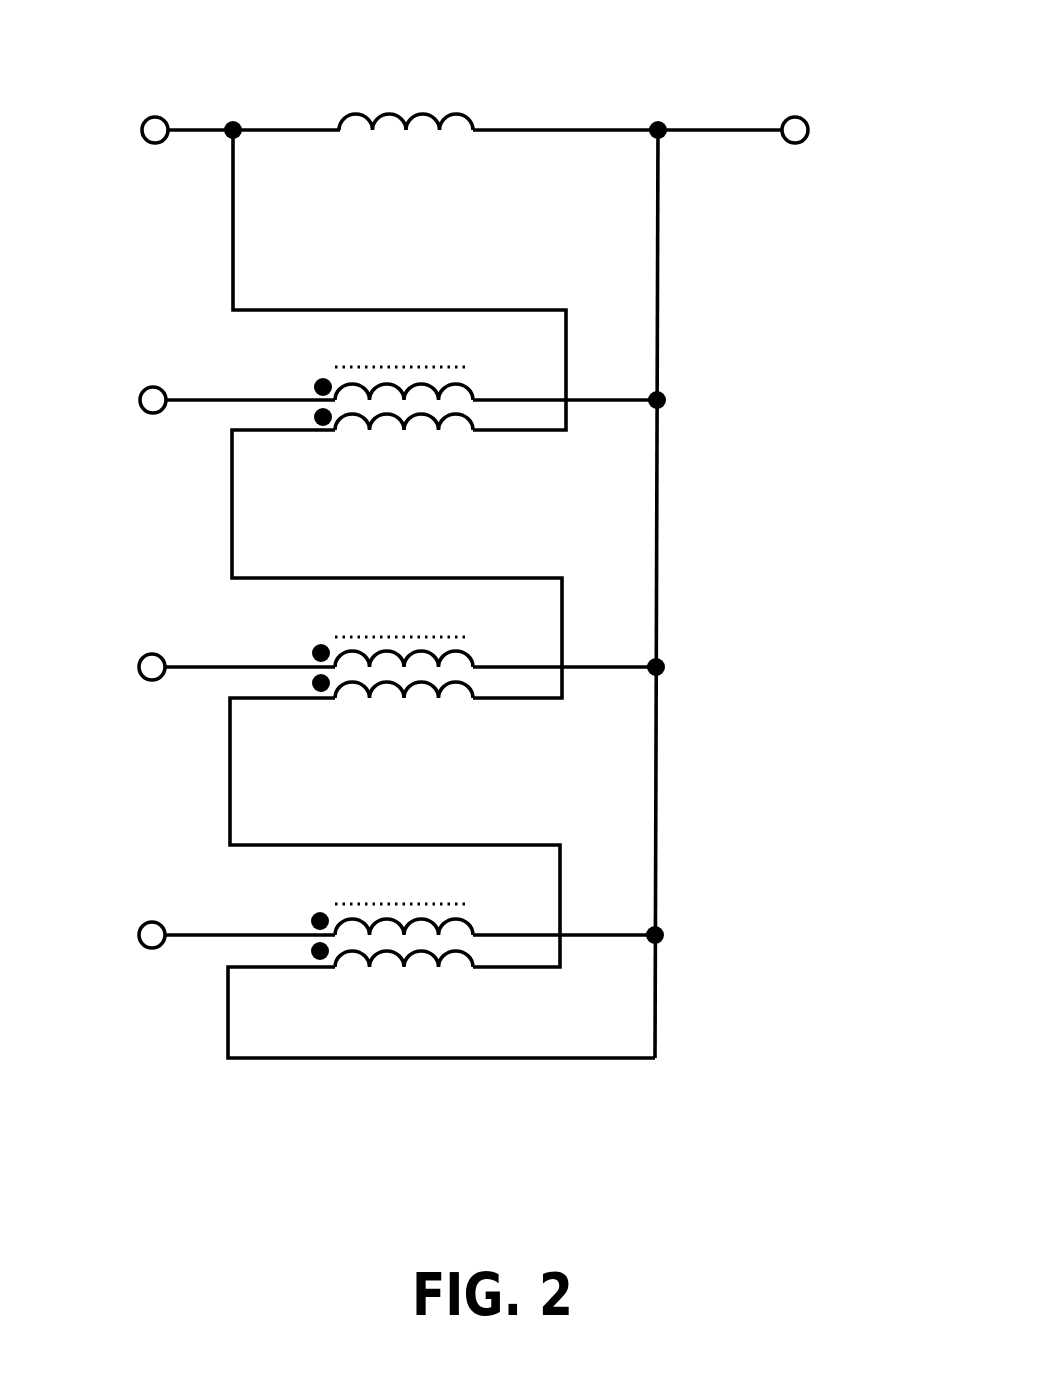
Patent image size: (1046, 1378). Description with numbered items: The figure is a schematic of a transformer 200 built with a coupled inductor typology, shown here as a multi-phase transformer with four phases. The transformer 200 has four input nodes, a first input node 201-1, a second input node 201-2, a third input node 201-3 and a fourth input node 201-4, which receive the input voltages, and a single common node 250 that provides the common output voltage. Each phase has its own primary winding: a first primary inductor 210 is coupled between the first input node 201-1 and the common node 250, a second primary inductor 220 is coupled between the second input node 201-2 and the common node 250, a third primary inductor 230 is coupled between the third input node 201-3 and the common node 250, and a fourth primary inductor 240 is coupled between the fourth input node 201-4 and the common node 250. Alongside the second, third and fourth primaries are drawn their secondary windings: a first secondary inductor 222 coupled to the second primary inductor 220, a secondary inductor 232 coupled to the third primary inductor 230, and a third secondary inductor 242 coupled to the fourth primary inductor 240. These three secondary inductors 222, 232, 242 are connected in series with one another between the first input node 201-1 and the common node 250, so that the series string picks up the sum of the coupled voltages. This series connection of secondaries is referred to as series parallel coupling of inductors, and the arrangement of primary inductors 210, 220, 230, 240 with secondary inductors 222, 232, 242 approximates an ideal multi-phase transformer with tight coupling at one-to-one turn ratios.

The transformer 200 is at (781, 1141).
The first input node 201-1 is at (146, 140).
The second input node 201-2 is at (144, 410).
The third input node 201-3 is at (143, 677).
The fourth input node 201-4 is at (143, 945).
The first primary inductor 210 is at (510, 90).
The second primary inductor 220 is at (541, 381).
The first secondary inductor 222 is at (541, 463).
The third primary inductor 230 is at (540, 638).
The secondary inductor 232 is at (540, 726).
The fourth primary inductor 240 is at (538, 908).
The third secondary inductor 242 is at (538, 993).
The common node 250 is at (798, 118).